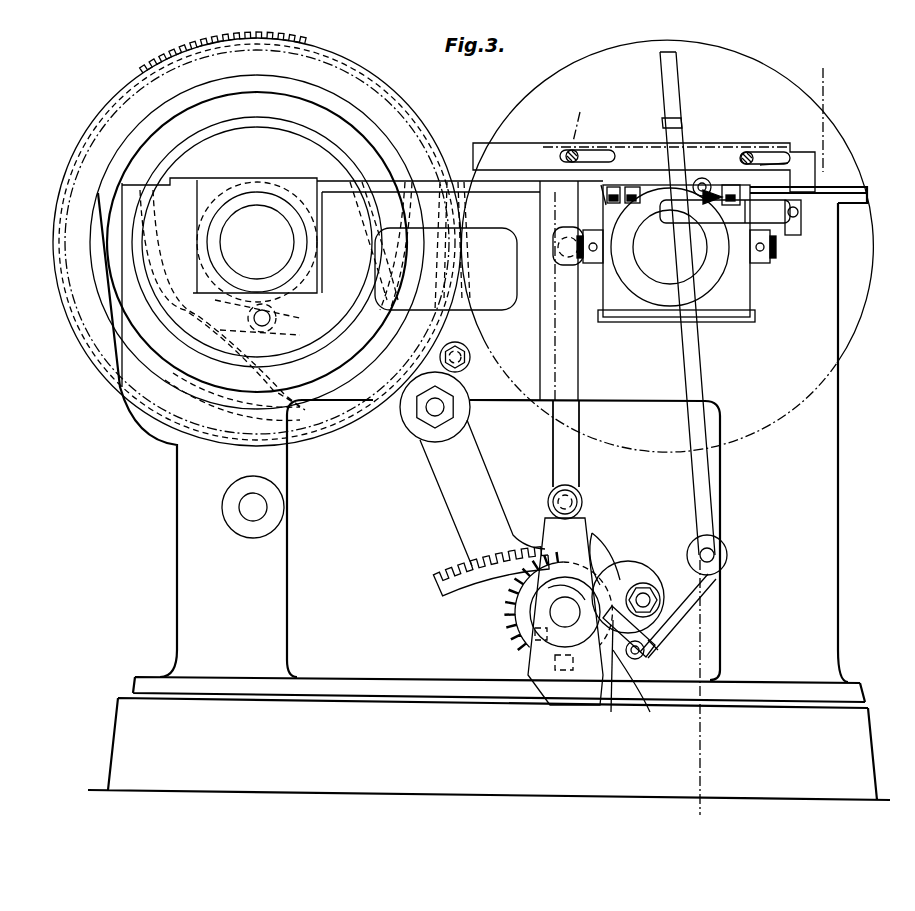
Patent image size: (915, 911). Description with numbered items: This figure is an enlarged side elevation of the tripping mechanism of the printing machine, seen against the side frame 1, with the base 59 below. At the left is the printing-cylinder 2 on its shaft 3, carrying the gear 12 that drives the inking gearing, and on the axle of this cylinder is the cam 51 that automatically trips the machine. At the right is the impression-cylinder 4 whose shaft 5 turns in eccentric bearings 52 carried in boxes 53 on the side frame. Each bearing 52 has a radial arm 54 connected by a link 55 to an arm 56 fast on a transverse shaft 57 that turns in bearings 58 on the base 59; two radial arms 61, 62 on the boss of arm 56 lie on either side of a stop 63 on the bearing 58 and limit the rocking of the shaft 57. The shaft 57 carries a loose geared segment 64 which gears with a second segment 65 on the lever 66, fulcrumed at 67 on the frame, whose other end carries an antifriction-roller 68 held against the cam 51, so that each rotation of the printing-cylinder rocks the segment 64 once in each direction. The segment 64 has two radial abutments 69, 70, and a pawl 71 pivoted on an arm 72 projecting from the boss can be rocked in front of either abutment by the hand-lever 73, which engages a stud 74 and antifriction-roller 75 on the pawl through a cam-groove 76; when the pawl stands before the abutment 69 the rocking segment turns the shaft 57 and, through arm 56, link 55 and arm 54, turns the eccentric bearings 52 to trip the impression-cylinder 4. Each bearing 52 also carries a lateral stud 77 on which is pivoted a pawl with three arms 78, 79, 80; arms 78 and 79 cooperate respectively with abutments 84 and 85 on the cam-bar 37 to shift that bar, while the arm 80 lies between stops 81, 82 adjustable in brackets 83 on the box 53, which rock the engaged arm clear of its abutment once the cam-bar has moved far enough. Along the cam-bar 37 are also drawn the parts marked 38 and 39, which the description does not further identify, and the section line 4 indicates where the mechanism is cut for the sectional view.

The side frame 1 is at (482, 440).
The printing-cylinder 2 is at (343, 70).
The shaft 3 is at (257, 242).
The impression-cylinder 4 is at (702, 437).
The shaft 5 is at (670, 247).
The gear 12 is at (182, 75).
The cam-bar 37 is at (644, 167).
The screw 38 is at (568, 152).
The slot 39 is at (588, 150).
The cam 51 is at (446, 269).
The bearing 52 is at (648, 282).
The box 53 is at (676, 305).
The radial arm 54 is at (570, 265).
The link 55 is at (563, 460).
The arm 56 is at (552, 524).
The transverse shaft 57 is at (565, 612).
The bearing 58 is at (555, 637).
The base 59 is at (489, 749).
The radial arm 61 is at (640, 620).
The radial arm 62 is at (535, 636).
The stop 63 is at (555, 666).
The geared segment 64 is at (512, 605).
The segment 65 is at (437, 584).
The lever 66 is at (482, 493).
The fulcrum 67 is at (440, 410).
The antifriction-roller 68 is at (262, 327).
The radial abutment 69 is at (590, 548).
The radial abutment 70 is at (612, 660).
The pawl 71 is at (623, 570).
The arm 72 is at (648, 585).
The hand-lever 73 is at (700, 350).
The stud 74 is at (644, 656).
The antifriction-roller 75 is at (656, 648).
The cam-groove 76 is at (615, 655).
The lateral stud 77 is at (706, 181).
The pawl-arm 78 is at (692, 185).
The pawl-arm 79 is at (731, 184).
The pawl-arm 80 is at (725, 211).
The stop 81 is at (633, 188).
The stop 82 is at (740, 224).
The bracket 83 is at (612, 198).
The abutment 84 is at (655, 186).
The abutment 85 is at (762, 165).